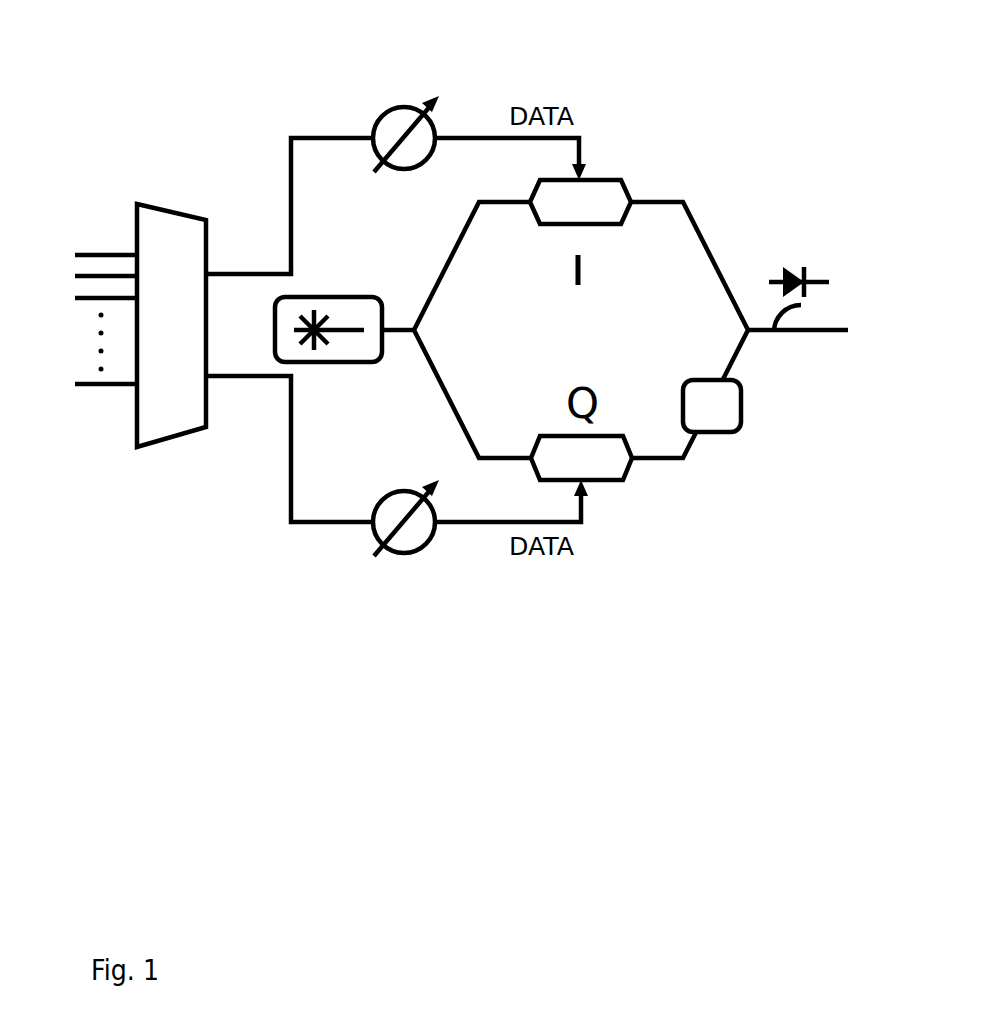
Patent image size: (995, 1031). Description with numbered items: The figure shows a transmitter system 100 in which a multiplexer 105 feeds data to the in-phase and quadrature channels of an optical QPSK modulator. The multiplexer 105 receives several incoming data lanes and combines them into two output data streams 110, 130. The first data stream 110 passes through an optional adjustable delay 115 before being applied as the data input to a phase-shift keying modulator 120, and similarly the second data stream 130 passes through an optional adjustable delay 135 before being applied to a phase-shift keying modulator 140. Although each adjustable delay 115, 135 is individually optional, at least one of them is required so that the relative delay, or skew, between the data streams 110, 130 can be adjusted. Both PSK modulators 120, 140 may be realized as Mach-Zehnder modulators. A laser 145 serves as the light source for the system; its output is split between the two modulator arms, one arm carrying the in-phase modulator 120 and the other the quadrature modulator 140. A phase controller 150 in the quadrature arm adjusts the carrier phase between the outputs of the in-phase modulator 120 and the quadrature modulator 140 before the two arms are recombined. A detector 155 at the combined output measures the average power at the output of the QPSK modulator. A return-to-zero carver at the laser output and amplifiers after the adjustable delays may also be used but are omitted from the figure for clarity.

The transmitter system 100 is at (244, 63).
The multiplexer 105 is at (152, 195).
The data stream 110 is at (301, 131).
The adjustable delay 115 is at (405, 102).
The phase-shift keying modulator 120 is at (612, 170).
The data stream 130 is at (310, 513).
The adjustable delay 135 is at (402, 485).
The phase-shift keying modulator 140 is at (618, 428).
The laser 145 is at (326, 292).
The phase controller 150 is at (738, 432).
The detector 155 is at (793, 262).